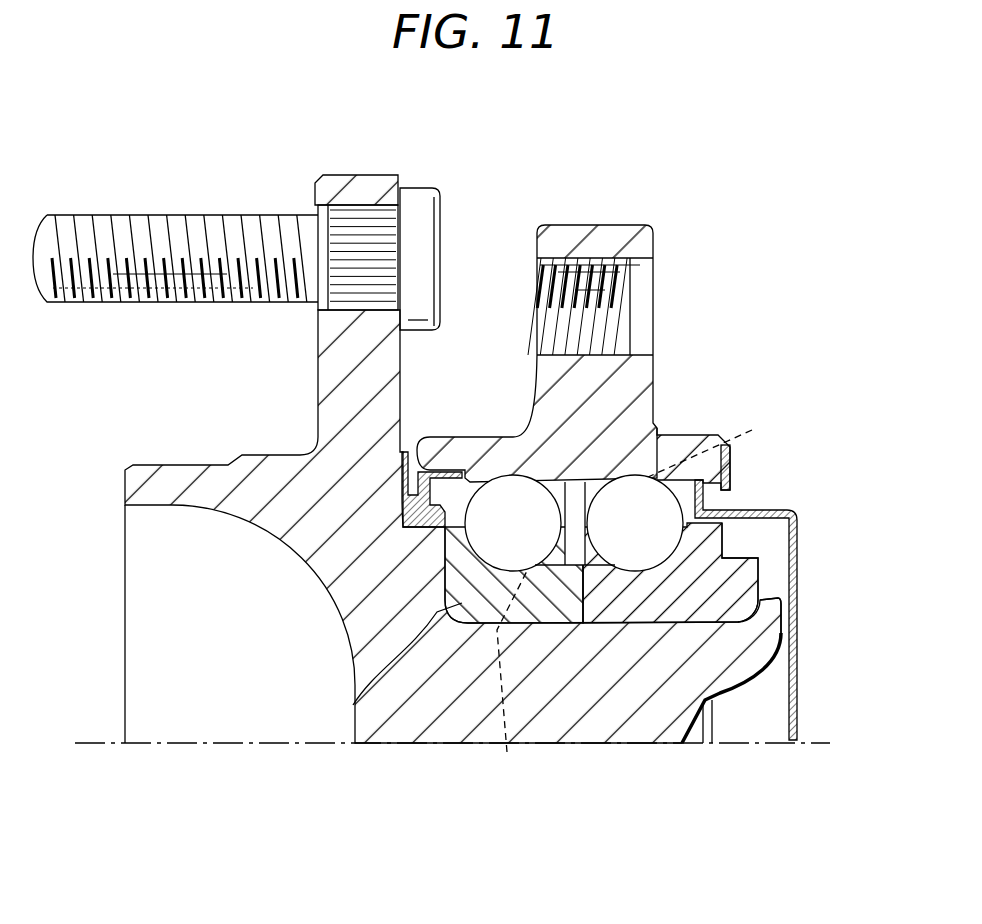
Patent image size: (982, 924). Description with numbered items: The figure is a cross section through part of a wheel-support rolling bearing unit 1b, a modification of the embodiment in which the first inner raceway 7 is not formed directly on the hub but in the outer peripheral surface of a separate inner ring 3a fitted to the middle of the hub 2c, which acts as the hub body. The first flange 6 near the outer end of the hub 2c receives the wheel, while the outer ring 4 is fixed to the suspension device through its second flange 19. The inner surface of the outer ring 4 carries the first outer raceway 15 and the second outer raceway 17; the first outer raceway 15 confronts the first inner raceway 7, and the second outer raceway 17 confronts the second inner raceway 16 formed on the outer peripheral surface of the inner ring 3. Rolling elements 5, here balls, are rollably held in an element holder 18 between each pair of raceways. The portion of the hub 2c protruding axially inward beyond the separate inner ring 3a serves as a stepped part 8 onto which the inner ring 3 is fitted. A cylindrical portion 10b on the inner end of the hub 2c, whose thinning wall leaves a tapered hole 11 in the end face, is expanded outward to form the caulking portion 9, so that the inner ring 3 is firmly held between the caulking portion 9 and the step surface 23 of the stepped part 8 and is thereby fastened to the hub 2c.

The wheel-support rolling bearing unit 1b is at (580, 323).
The hub 2c is at (410, 708).
The inner ring 3 is at (745, 573).
The separate inner ring 3a is at (354, 688).
The outer ring 4 is at (647, 364).
The rolling elements 5 is at (504, 480).
The first flange 6 is at (363, 190).
The first inner raceway 7 is at (463, 603).
The stepped part 8 is at (612, 621).
The caulking portion 9 is at (768, 605).
The cylindrical portion 10b is at (762, 652).
The tapered hole 11 is at (755, 676).
The first outer raceway 15 is at (507, 480).
The second inner raceway 16 is at (705, 505).
The second outer raceway 17 is at (673, 437).
The element holder 18 is at (628, 590).
The second flange 19 is at (599, 224).
The step surface 23 is at (583, 612).